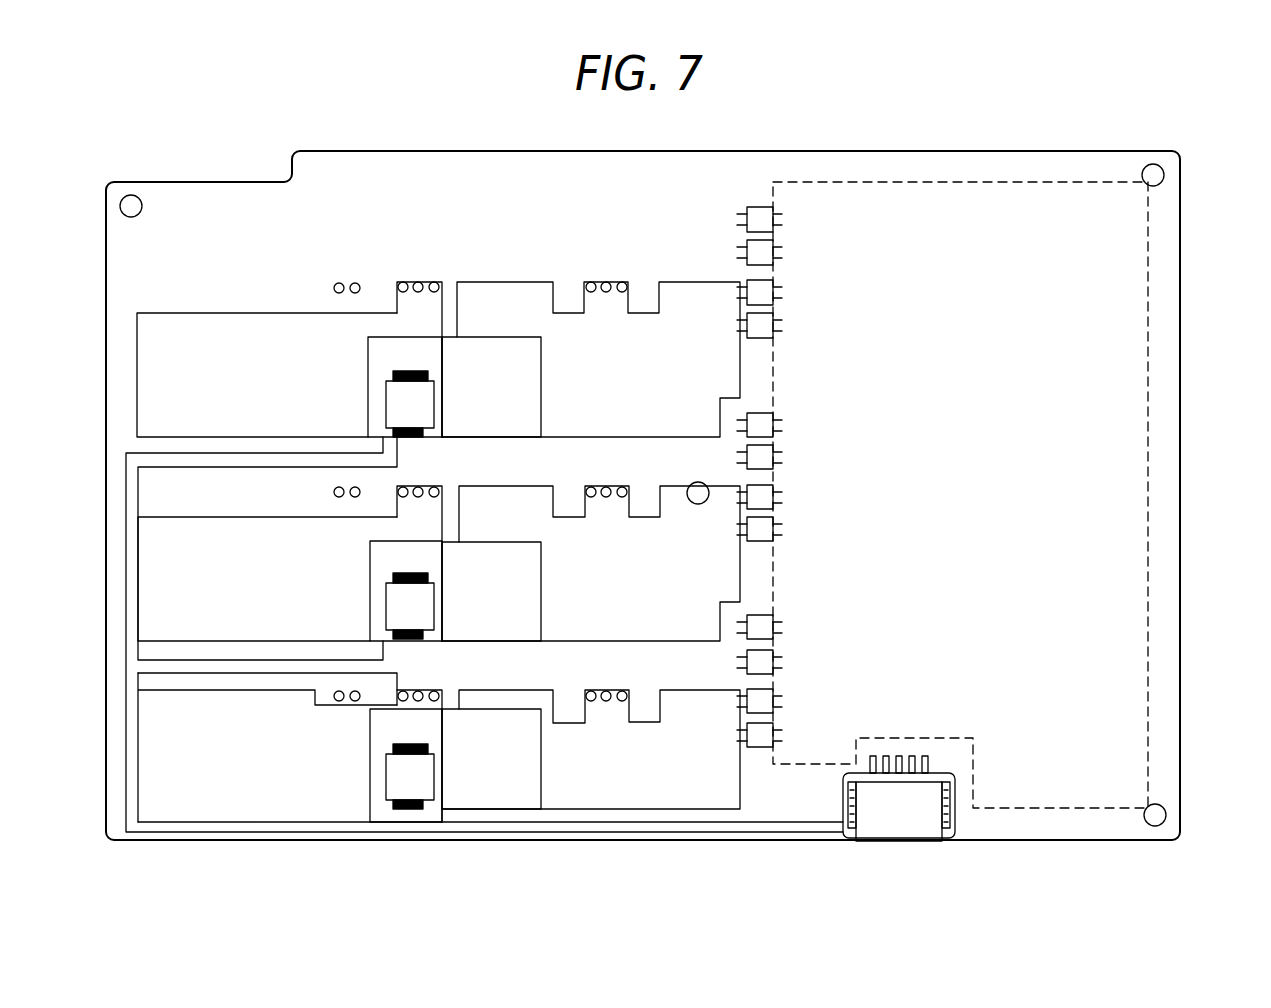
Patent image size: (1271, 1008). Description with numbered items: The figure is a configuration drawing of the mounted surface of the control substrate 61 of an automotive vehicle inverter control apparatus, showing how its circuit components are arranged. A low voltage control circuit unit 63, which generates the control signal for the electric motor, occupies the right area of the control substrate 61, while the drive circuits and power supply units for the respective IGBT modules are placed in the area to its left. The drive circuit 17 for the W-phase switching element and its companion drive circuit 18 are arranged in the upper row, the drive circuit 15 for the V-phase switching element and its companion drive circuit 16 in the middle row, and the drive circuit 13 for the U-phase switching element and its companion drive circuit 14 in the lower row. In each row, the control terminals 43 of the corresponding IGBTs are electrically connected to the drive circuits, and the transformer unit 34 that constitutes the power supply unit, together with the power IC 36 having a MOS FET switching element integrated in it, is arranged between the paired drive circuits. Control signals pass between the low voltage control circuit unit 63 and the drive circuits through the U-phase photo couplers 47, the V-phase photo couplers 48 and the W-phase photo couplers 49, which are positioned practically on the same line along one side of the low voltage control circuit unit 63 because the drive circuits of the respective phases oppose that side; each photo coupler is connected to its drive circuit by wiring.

The drive circuit 13 is at (731, 789).
The drive circuit 14 is at (162, 759).
The drive circuit 15 is at (637, 622).
The drive circuit 16 is at (155, 584).
The drive circuit 17 is at (640, 418).
The drive circuit 18 is at (160, 373).
The transformer unit 34 is at (505, 352).
The power IC 36 is at (391, 395).
The control terminals 43 is at (422, 282).
The U-phase photo couplers 47 is at (785, 627).
The V-phase photo couplers 48 is at (785, 424).
The W-phase photo couplers 49 is at (785, 219).
The control substrate 61 is at (1180, 246).
The low voltage control circuit unit 63 is at (1148, 372).